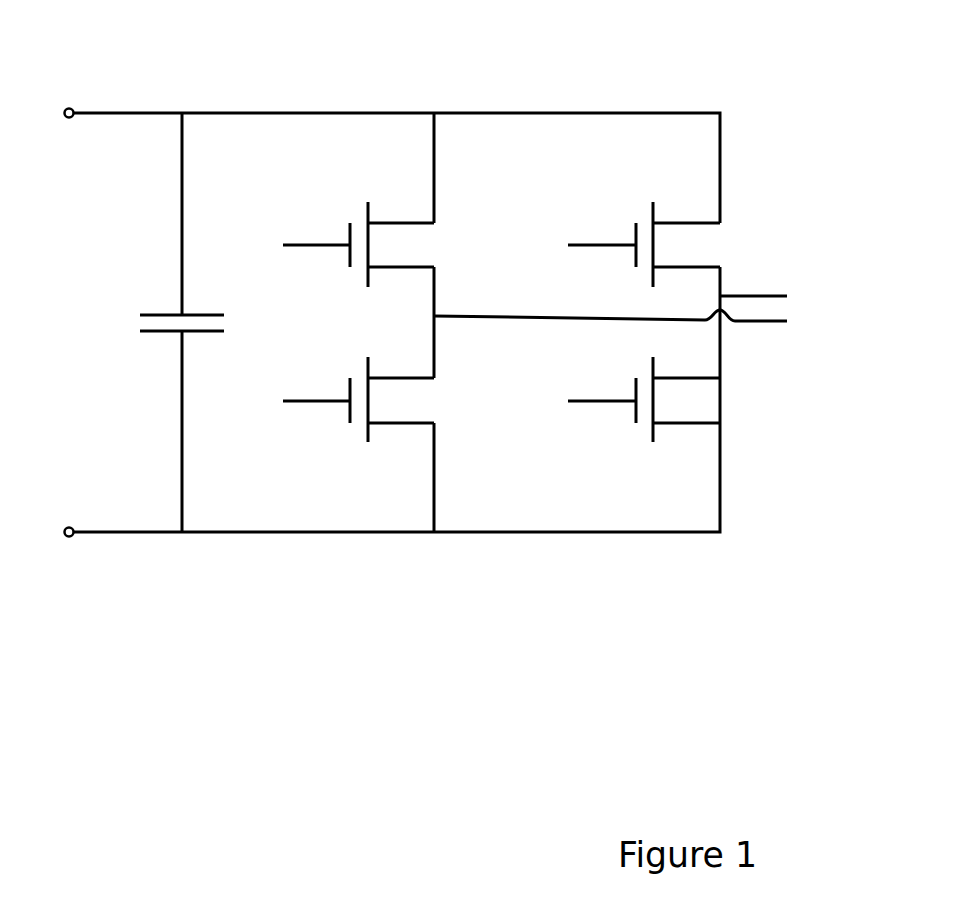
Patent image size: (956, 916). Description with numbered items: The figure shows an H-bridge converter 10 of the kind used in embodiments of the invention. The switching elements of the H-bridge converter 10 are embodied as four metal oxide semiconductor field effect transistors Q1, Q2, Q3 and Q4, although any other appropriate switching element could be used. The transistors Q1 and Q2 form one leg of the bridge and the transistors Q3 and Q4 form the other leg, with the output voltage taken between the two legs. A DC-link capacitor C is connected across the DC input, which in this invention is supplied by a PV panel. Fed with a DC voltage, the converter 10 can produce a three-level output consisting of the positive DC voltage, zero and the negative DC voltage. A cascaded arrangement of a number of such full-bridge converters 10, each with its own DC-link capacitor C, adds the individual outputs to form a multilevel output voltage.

The H-bridge converter 10 is at (447, 274).
The MOSFET switching element Q1 is at (358, 237).
The MOSFET switching element Q2 is at (358, 392).
The MOSFET switching element Q3 is at (644, 237).
The MOSFET switching element Q4 is at (644, 392).
The DC-link capacitor C is at (172, 322).